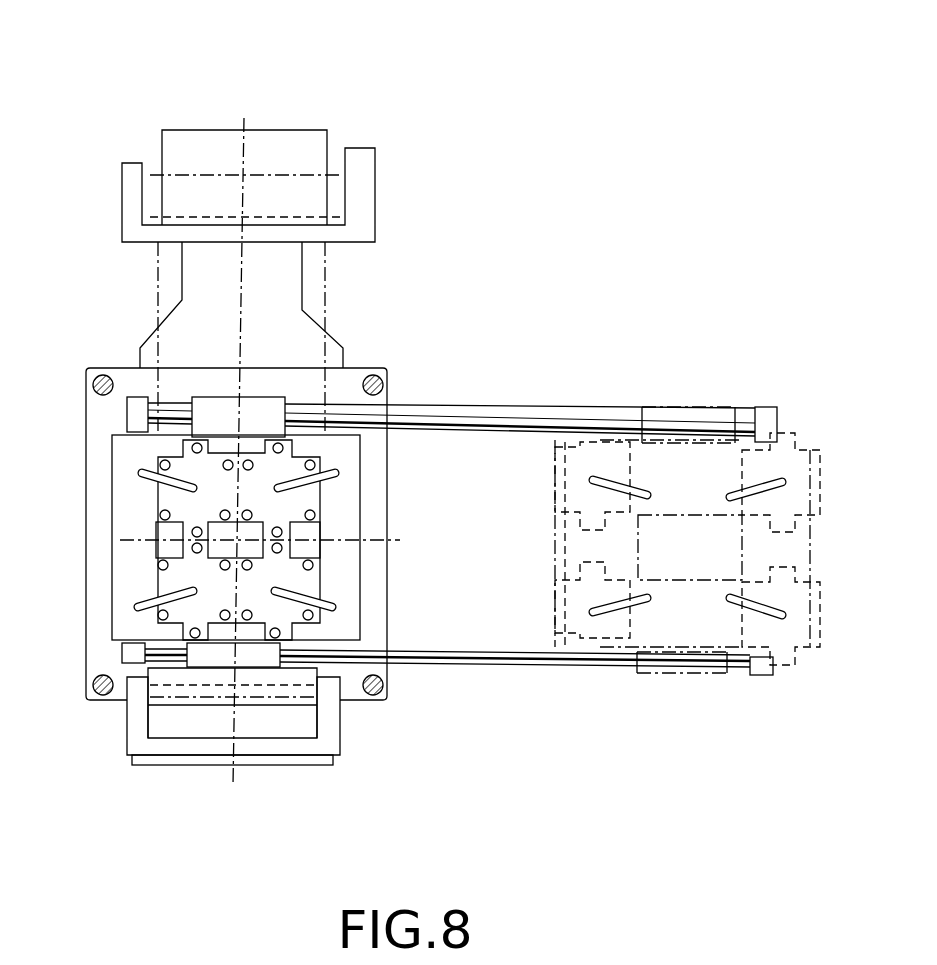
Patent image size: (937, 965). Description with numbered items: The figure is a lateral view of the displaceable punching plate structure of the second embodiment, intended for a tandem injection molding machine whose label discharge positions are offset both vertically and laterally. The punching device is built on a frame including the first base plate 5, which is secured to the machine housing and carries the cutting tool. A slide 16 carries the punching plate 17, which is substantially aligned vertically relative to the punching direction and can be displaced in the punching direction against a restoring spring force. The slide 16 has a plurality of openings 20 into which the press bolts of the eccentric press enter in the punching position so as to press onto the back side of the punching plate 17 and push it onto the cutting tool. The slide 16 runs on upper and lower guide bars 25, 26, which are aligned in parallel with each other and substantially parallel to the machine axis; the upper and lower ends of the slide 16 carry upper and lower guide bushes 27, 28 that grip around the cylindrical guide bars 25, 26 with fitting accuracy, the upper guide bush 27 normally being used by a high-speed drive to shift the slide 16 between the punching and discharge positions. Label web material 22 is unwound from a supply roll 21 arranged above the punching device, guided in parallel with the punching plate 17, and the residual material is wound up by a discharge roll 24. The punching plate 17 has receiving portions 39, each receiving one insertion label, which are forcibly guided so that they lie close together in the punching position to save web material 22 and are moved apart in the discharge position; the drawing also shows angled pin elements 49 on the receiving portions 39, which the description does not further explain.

The first base plate 5 is at (100, 648).
The slide 16 is at (120, 615).
The punching plate 17 is at (330, 498).
The openings 20 is at (147, 463).
The supply roll 21 is at (158, 113).
The label web material 22 is at (173, 265).
The discharge roll 24 is at (165, 780).
The upper guide bar 25 is at (538, 417).
The lower guide bar 26 is at (503, 660).
The upper guide bush 27 is at (255, 405).
The lower guide bush 28 is at (213, 655).
The receiving portions 39 is at (557, 455).
The pin 49 is at (143, 600).